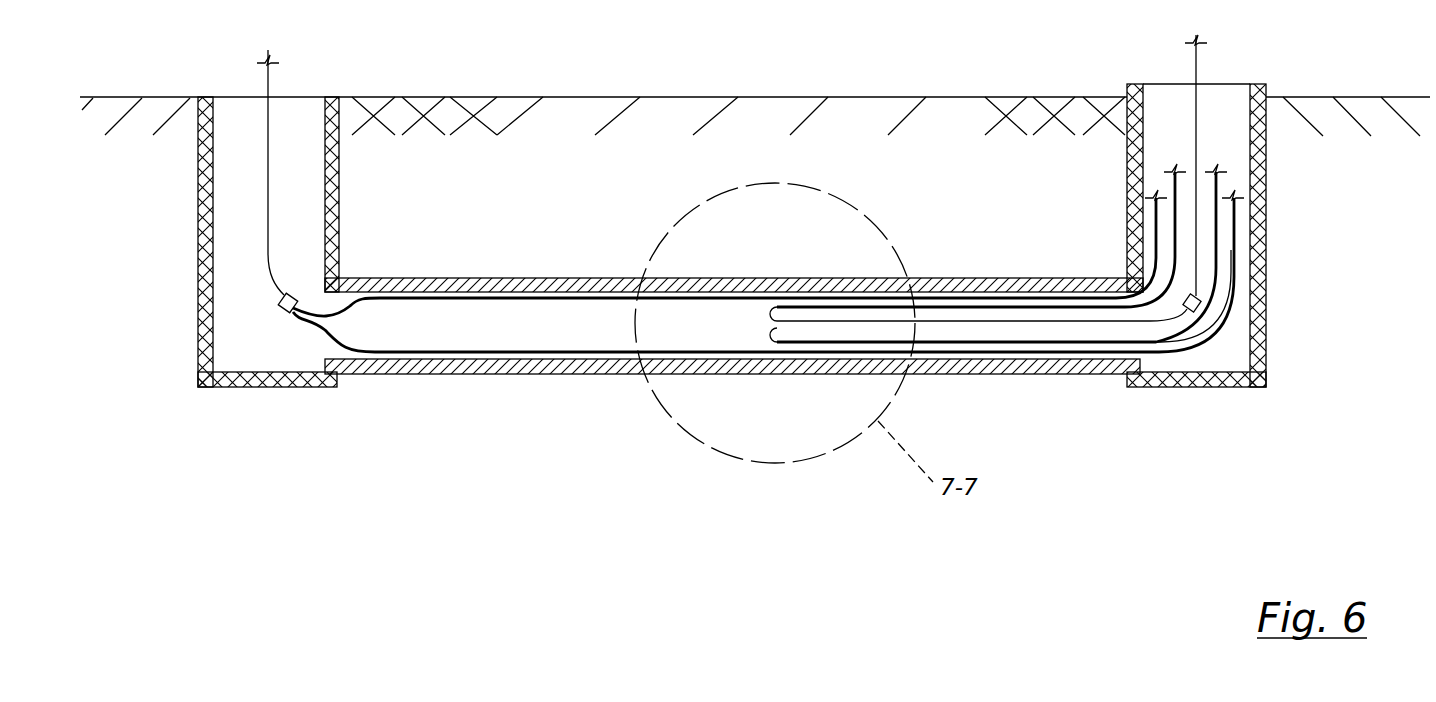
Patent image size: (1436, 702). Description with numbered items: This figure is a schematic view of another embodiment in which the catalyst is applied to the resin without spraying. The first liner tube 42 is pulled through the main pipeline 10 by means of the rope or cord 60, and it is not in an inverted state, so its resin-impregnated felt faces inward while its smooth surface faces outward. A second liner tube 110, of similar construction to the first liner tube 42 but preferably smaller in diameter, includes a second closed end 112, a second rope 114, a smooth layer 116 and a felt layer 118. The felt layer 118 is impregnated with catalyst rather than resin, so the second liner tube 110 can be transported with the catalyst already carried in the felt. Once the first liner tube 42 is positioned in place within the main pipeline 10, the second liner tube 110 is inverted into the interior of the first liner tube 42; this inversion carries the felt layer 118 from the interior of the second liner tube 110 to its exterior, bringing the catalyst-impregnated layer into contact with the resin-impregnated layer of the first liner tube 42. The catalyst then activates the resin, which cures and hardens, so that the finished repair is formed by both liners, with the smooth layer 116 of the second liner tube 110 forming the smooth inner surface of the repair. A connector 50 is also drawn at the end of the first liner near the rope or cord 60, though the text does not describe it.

The main pipeline 10 is at (444, 276).
The first liner tube 42 is at (614, 296).
The connector 50 is at (298, 292).
The rope or cord 60 is at (268, 88).
The second liner tube 110 is at (1187, 238).
The second closed end 112 is at (1200, 298).
The second rope 114 is at (1196, 70).
The smooth layer 116 is at (777, 312).
The felt layer 118 is at (768, 297).